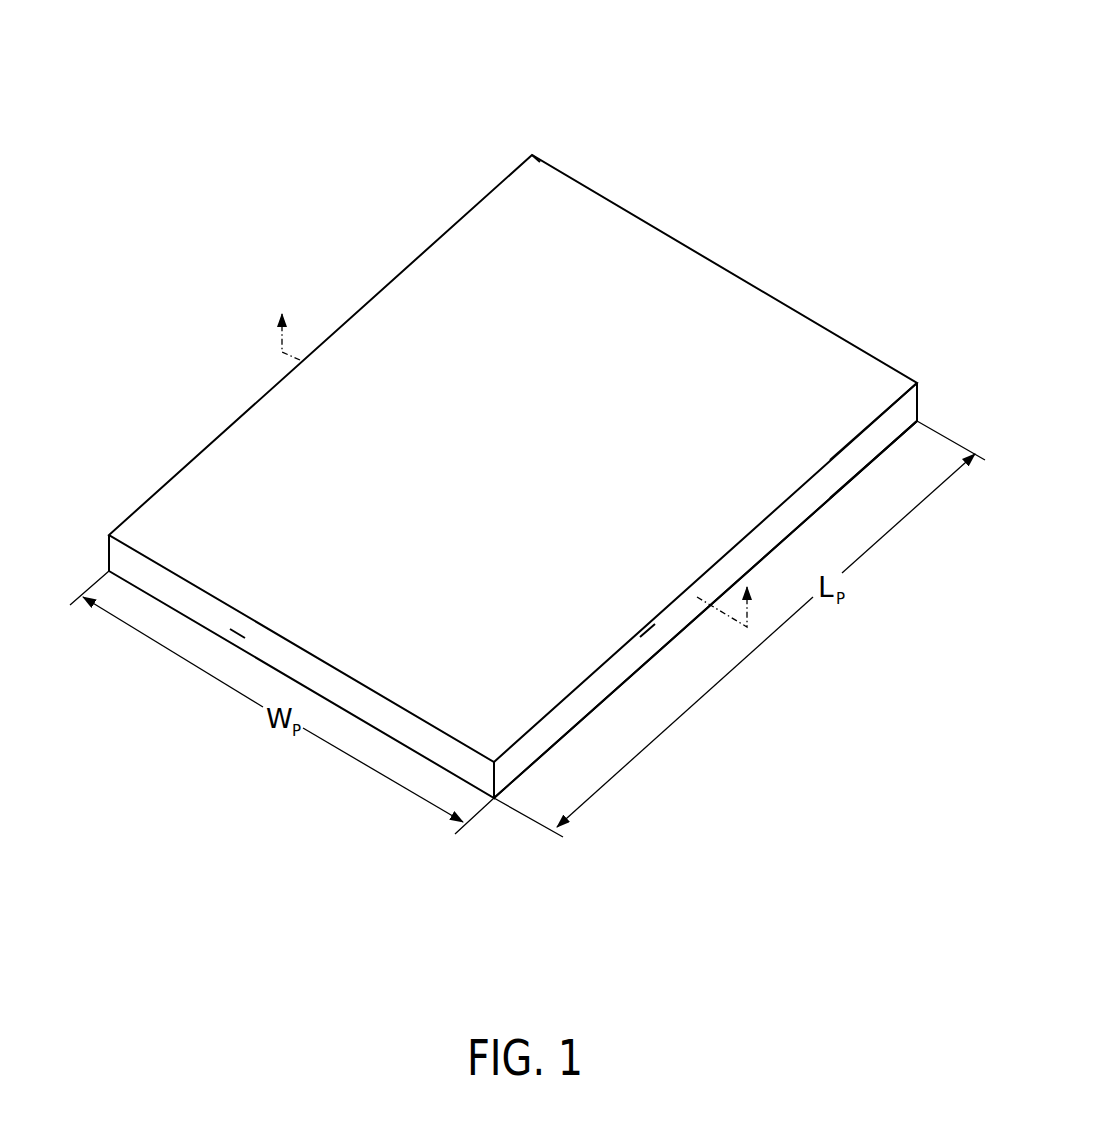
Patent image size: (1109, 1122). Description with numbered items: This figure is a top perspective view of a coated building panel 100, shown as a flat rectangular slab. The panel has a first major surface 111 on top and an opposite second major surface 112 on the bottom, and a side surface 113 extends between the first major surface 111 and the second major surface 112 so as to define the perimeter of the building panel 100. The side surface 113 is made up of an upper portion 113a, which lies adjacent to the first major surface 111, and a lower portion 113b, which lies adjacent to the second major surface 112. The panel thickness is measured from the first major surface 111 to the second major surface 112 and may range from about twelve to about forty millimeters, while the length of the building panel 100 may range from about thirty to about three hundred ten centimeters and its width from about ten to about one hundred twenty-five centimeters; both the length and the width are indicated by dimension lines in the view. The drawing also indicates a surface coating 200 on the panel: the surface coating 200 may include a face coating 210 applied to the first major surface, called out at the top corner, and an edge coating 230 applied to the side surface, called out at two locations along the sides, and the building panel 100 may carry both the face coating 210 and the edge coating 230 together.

The coated building panel 100 is at (538, 411).
The first major surface 111 is at (398, 322).
The second major surface 112 is at (573, 727).
The side surface 113 is at (383, 717).
The upper portion 113a is at (881, 424).
The lower portion 113b is at (893, 437).
The surface coating 200 is at (413, 348).
The face coating 210 is at (582, 265).
The edge coating 230 is at (238, 633).